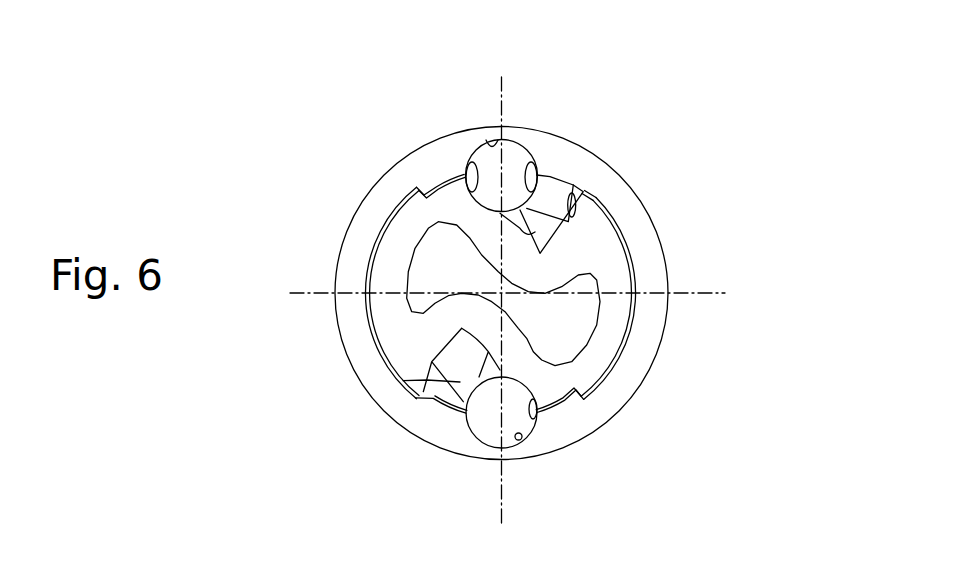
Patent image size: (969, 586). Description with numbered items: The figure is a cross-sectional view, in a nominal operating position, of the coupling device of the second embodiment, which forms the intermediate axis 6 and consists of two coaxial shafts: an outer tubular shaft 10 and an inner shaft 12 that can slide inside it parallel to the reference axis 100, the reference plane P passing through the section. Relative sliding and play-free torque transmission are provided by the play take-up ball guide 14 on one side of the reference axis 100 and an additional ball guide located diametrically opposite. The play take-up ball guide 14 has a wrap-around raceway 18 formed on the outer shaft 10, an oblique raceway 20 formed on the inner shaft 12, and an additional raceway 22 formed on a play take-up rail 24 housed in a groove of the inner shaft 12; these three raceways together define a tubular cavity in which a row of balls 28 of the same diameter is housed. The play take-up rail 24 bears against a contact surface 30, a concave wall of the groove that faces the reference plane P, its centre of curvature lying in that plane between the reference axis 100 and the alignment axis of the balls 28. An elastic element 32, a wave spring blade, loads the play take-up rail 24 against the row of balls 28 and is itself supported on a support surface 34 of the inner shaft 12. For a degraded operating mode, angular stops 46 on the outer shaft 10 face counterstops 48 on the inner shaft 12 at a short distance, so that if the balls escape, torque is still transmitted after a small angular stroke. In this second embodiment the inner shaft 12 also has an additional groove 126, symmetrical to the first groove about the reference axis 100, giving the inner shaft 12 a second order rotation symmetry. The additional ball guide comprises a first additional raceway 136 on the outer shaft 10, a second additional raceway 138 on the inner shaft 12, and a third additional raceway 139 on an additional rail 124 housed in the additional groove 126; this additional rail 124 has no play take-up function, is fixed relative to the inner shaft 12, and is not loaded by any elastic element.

The intermediate axis 6 is at (291, 246).
The outer tubular shaft 10 is at (653, 322).
The inner shaft 12 is at (610, 258).
The play take-up ball guide 14 is at (390, 100).
The wrap-around raceway 18 is at (478, 146).
The oblique raceway 20 is at (432, 182).
The additional raceway 22 is at (545, 203).
The play take-up rail 24 is at (579, 188).
The balls 28 is at (509, 167).
The contact surface 30 is at (598, 196).
The elastic element 32 is at (602, 200).
The support surface 34 is at (520, 210).
The angular stops 46 is at (420, 183).
The counterstops 48 is at (427, 195).
The reference axis 100 is at (505, 302).
The additional rail 124 is at (428, 381).
The additional groove 126 is at (441, 422).
The first additional raceway 136 is at (523, 438).
The second additional raceway 138 is at (538, 422).
The third additional raceway 139 is at (486, 390).
The reference plane P is at (507, 520).